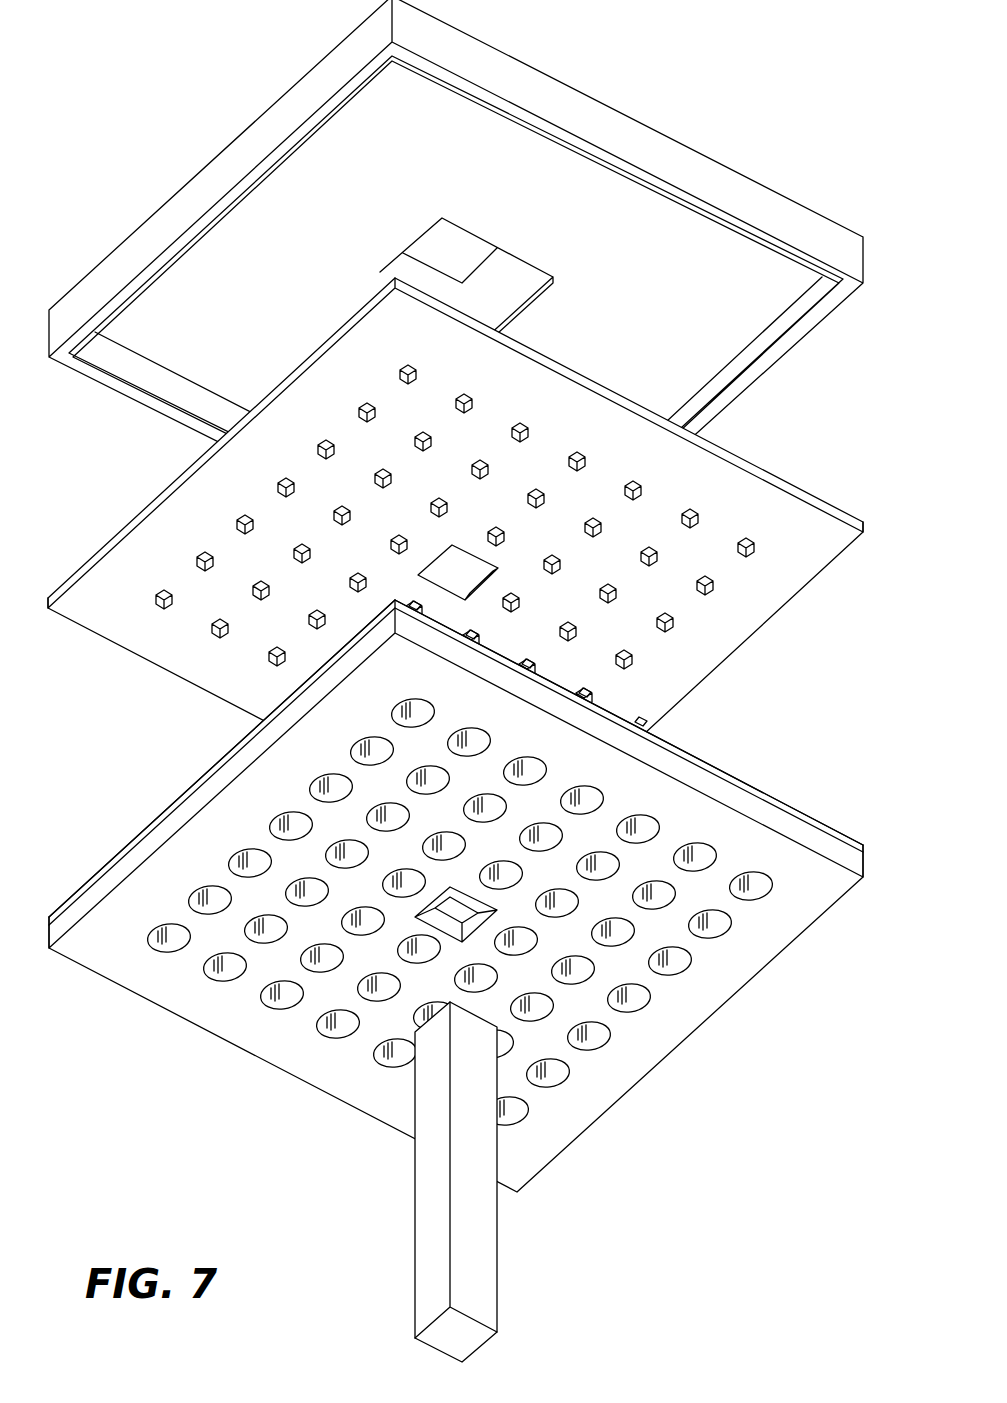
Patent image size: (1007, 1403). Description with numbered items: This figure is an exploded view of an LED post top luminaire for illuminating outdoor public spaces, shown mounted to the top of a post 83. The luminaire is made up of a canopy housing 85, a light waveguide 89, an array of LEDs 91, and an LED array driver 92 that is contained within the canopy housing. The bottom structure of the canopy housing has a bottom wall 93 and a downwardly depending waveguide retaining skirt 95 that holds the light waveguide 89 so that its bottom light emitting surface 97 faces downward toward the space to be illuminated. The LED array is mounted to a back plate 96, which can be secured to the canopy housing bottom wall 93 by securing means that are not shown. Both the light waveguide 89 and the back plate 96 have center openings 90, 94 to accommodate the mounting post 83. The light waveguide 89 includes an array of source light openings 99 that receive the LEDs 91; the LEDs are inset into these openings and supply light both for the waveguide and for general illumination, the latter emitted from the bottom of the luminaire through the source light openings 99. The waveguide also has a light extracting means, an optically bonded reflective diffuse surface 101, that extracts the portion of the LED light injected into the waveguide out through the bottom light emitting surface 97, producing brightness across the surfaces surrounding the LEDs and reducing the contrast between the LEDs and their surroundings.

The post 83 is at (482, 1290).
The canopy housing 85 is at (790, 355).
The light waveguide 89 is at (790, 825).
The center opening 90 is at (450, 897).
The array of LEDs 91 is at (668, 630).
The LED array driver 92 is at (455, 242).
The bottom wall 93 is at (787, 283).
The center opening 94 is at (470, 565).
The waveguide retaining skirt 95 is at (730, 187).
The back plate 96 is at (795, 478).
The bottom light emitting surface 97 is at (787, 917).
The source light openings 99 is at (229, 975).
The optically bonded reflective diffuse surface 101 is at (787, 797).